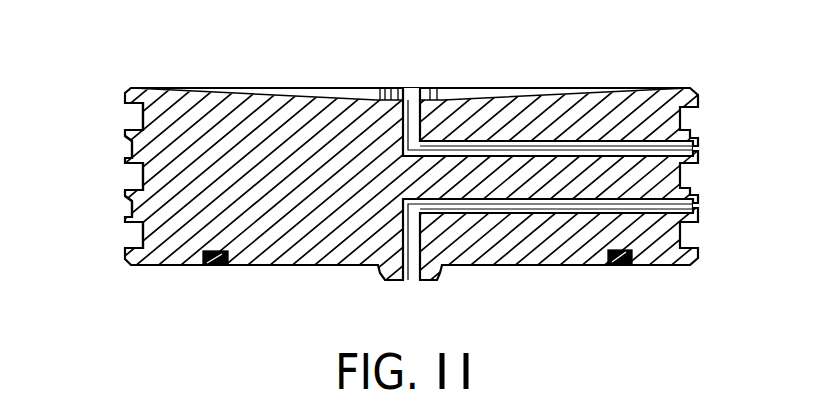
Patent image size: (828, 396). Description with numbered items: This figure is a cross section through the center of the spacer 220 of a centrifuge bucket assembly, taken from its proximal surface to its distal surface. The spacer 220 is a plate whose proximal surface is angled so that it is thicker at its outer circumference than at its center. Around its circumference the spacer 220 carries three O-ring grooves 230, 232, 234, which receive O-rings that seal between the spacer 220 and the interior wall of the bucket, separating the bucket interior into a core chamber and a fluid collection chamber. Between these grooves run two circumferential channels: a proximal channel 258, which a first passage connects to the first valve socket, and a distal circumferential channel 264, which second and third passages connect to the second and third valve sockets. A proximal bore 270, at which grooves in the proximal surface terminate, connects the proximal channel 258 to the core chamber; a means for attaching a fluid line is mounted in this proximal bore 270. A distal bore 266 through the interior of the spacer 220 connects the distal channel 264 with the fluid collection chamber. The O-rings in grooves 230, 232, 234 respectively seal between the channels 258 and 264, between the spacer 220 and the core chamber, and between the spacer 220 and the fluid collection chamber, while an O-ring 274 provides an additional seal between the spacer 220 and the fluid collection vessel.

The spacer 220 is at (218, 72).
The O-ring groove 230 is at (140, 122).
The proximal channel 258 is at (130, 147).
The O-ring groove 232 is at (140, 175).
The distal circumferential channel 264 is at (130, 205).
The O-ring groove 234 is at (140, 235).
The proximal bore 270 is at (410, 117).
The distal bore 266 is at (410, 281).
The O-ring 274 is at (217, 266).